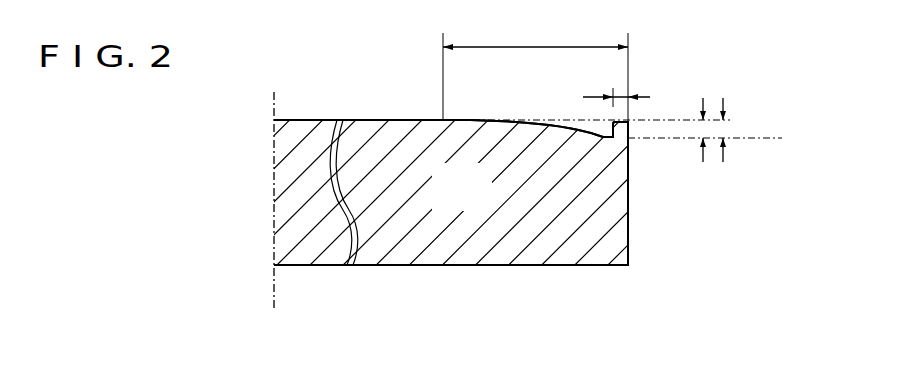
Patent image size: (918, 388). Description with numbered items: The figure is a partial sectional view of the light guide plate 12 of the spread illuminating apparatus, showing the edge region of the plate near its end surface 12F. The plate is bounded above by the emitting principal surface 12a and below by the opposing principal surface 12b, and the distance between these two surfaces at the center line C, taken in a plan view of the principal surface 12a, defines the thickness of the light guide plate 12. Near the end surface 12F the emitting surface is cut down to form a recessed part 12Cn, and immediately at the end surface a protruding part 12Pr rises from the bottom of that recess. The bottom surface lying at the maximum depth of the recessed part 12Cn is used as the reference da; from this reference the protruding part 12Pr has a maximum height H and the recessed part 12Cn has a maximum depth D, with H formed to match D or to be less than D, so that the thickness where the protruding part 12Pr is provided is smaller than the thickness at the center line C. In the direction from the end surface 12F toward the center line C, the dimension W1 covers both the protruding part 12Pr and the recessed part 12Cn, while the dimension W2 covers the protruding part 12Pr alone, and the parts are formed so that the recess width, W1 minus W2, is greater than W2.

The light guide plate 12 is at (483, 200).
The principal surface 12a is at (391, 120).
The principal surface 12b is at (433, 266).
The recessed part 12Cn is at (597, 137).
The protruding part 12Pr is at (629, 140).
The end surface 12F is at (628, 237).
The center line C is at (275, 180).
The dimension W1 is at (535, 69).
The dimension W2 is at (628, 88).
The maximum height H is at (703, 147).
The maximum depth D is at (724, 147).
The reference da is at (766, 138).